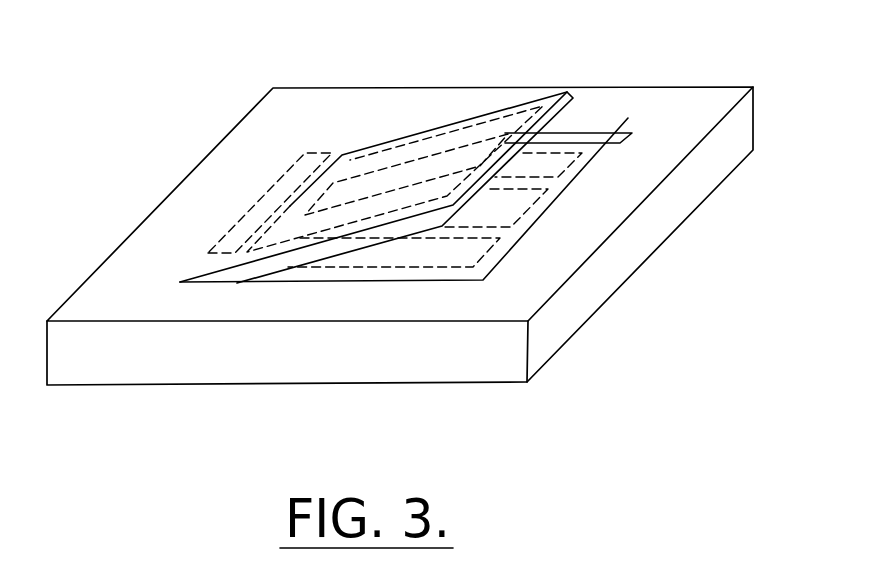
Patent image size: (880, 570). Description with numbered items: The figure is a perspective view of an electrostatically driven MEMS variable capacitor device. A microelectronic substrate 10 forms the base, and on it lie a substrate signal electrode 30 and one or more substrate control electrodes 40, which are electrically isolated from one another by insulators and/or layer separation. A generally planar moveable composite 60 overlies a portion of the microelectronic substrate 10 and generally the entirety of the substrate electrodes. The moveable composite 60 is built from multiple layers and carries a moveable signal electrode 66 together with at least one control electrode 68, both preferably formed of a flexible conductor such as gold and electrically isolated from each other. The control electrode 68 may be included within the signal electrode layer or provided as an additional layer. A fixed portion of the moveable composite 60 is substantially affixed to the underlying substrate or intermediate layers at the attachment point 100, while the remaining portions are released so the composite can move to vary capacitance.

The microelectronic substrate 10 is at (400, 215).
The substrate signal electrode 30 is at (410, 243).
The substrate control electrode 40 is at (465, 239).
The moveable composite 60 is at (405, 157).
The moveable signal electrode 66 is at (406, 136).
The control electrode 68 is at (395, 228).
The attachment point 100 is at (318, 140).